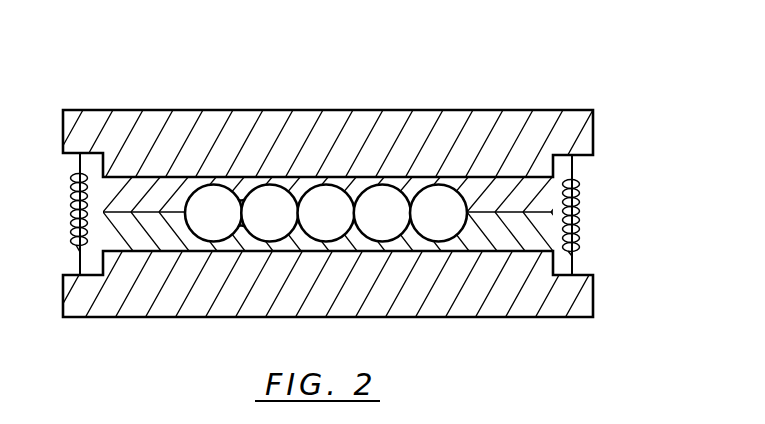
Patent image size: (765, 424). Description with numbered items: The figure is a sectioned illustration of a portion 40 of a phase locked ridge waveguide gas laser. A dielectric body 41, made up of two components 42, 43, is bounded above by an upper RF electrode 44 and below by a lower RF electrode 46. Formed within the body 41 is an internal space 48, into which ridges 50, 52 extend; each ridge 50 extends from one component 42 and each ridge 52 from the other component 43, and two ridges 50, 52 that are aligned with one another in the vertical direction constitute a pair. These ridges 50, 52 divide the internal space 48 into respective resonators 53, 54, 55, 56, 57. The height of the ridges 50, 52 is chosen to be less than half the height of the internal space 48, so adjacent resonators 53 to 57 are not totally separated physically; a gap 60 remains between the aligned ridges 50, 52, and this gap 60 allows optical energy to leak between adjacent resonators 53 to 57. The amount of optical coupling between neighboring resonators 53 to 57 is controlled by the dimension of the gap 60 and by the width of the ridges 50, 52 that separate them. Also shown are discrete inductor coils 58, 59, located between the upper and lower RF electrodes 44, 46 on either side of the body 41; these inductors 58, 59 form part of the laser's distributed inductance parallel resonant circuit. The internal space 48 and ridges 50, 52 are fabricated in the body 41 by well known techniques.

The portion 40 is at (374, 54).
The dielectric body 41 is at (100, 242).
The component 42 is at (557, 178).
The component 43 is at (517, 247).
The upper RF electrode 44 is at (481, 110).
The lower RF electrode 46 is at (512, 318).
The internal space 48 is at (184, 190).
The ridge 50 is at (240, 205).
The ridge 52 is at (240, 233).
The resonator 53 is at (226, 224).
The resonator 54 is at (282, 224).
The resonator 55 is at (338, 224).
The resonator 56 is at (395, 224).
The resonator 57 is at (451, 224).
The inductor coil 58 is at (72, 212).
The inductor coil 59 is at (578, 217).
The gap 60 is at (300, 212).